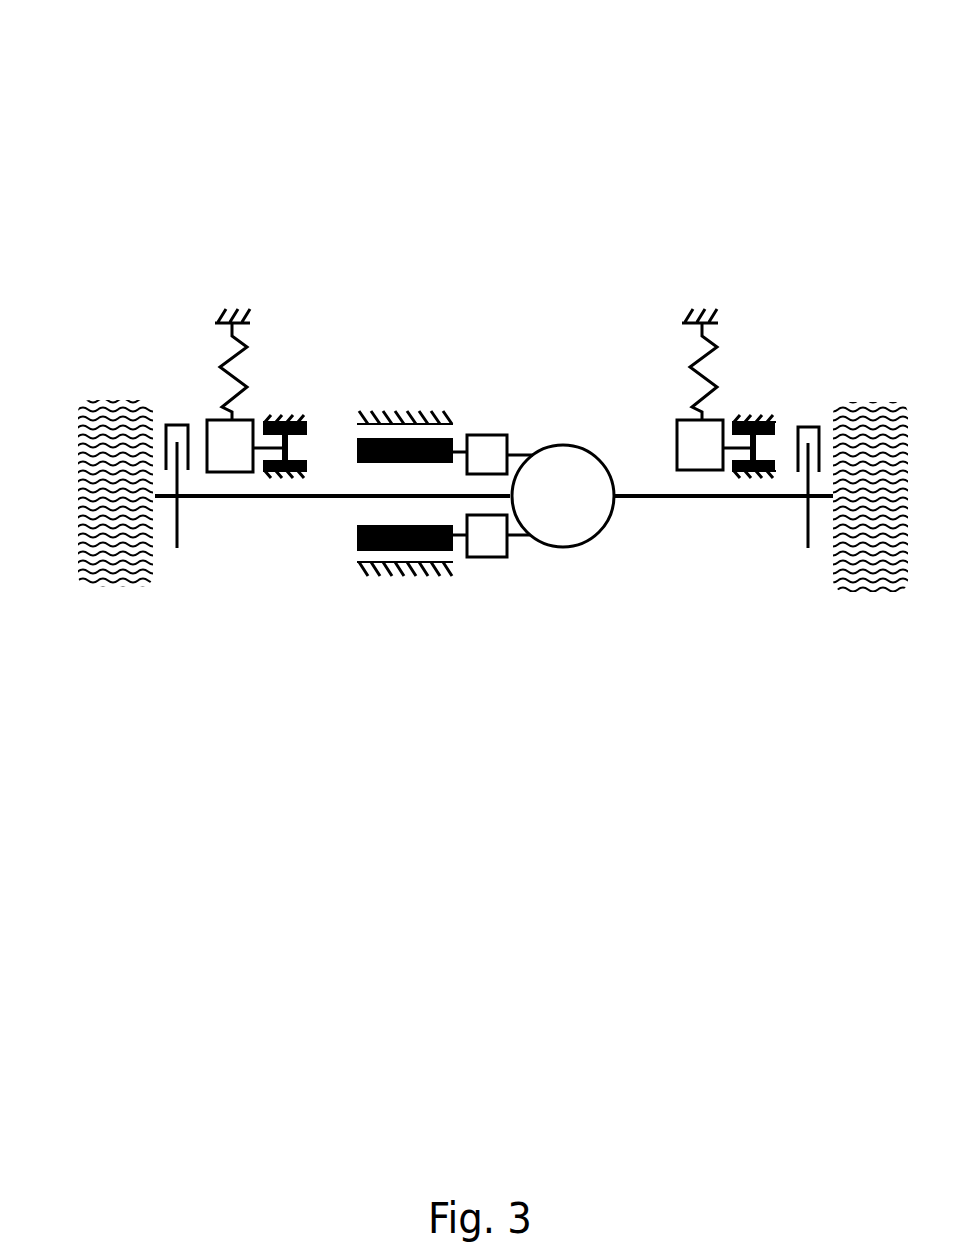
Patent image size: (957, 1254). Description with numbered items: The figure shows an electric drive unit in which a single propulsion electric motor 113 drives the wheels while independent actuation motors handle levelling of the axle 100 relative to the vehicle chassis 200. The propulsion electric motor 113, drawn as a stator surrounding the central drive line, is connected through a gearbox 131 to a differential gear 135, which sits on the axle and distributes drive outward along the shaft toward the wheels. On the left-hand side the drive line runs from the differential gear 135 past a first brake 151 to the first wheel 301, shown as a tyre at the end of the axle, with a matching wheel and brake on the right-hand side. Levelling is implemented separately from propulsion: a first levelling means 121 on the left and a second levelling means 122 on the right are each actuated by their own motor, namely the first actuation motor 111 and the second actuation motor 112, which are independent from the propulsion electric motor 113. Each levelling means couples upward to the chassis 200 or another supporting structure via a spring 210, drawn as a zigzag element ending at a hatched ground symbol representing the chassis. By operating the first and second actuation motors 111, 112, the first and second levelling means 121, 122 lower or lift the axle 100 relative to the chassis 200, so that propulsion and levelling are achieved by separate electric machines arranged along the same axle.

The drive unit 100 is at (251, 145).
The vehicle chassis 200 is at (238, 303).
The spring 210 is at (208, 363).
The first wheel 301 is at (103, 400).
The first brake 151 is at (176, 548).
The first levelling means 121 is at (229, 457).
The first actuation motor 111 is at (280, 415).
The propulsion electric motor 113 is at (380, 550).
The gearbox 131 is at (482, 540).
The differential gear 135 is at (602, 532).
The second levelling means 122 is at (700, 467).
The second actuation motor 112 is at (752, 417).